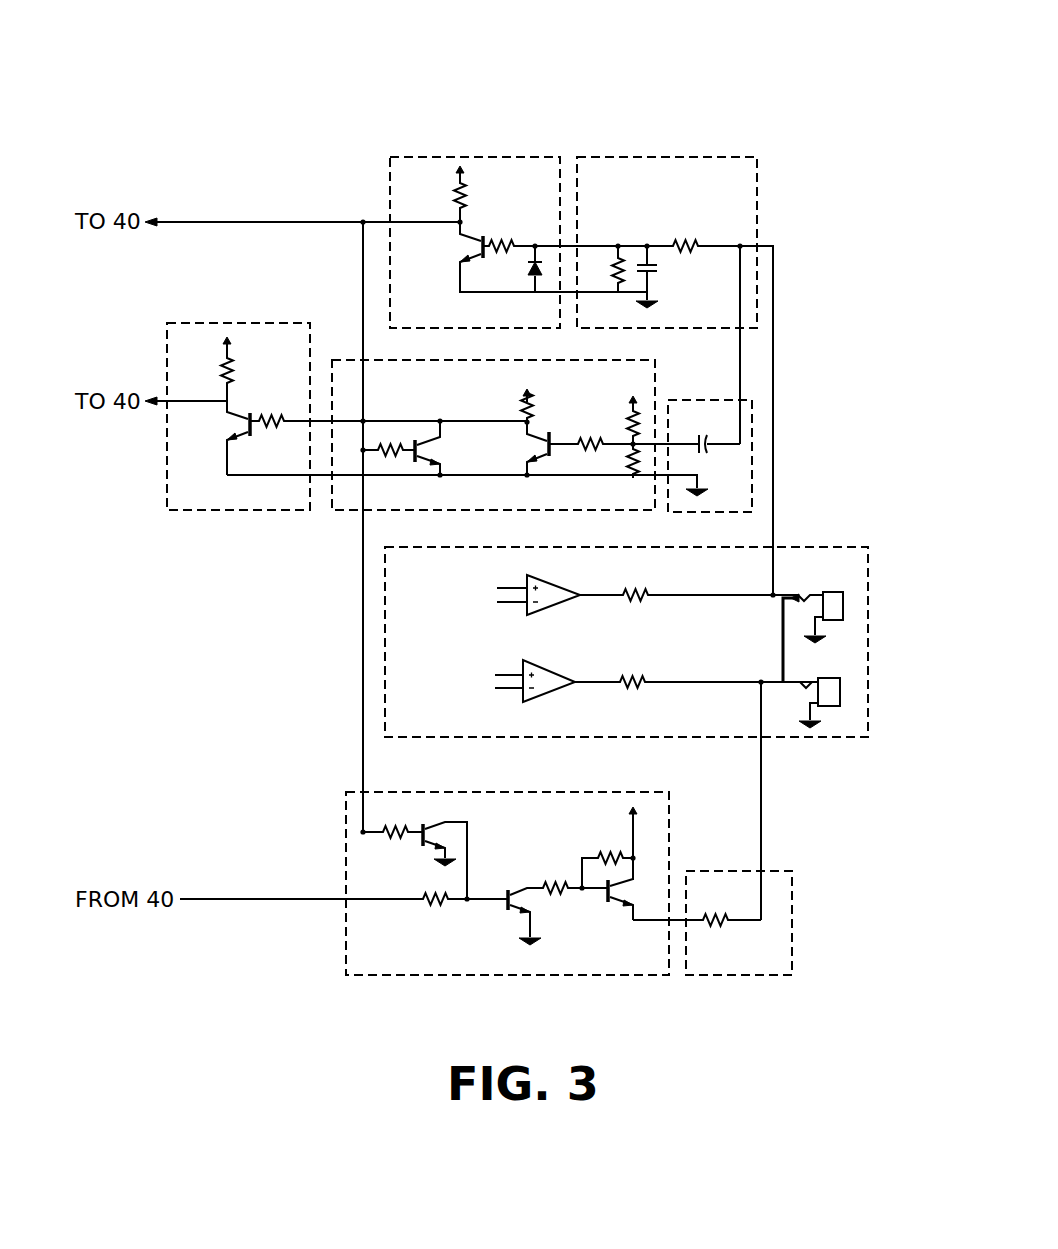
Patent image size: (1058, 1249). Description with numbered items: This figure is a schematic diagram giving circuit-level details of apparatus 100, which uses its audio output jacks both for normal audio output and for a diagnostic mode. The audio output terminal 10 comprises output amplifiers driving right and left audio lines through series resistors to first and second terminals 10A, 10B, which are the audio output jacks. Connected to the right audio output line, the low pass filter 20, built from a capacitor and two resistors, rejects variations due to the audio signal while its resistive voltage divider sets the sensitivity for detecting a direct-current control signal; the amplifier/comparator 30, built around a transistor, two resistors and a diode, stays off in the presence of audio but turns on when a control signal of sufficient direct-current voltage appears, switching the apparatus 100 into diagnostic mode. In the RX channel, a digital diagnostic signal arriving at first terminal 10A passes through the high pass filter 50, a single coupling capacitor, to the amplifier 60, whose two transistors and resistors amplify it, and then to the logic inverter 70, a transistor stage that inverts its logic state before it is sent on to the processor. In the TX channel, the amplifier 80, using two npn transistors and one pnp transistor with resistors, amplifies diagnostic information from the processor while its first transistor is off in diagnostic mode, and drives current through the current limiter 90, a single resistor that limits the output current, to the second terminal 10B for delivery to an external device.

The apparatus 100 is at (528, 41).
The audio output terminal 10 is at (664, 612).
The first terminal 10A is at (843, 606).
The second terminal 10B is at (840, 692).
The low pass filter 20 is at (663, 156).
The amplifier/comparator 30 is at (467, 156).
The high pass filter 50 is at (698, 398).
The amplifier 60 is at (350, 513).
The logic inverter 70 is at (232, 513).
The amplifier 80 is at (345, 843).
The current limiter 90 is at (710, 870).